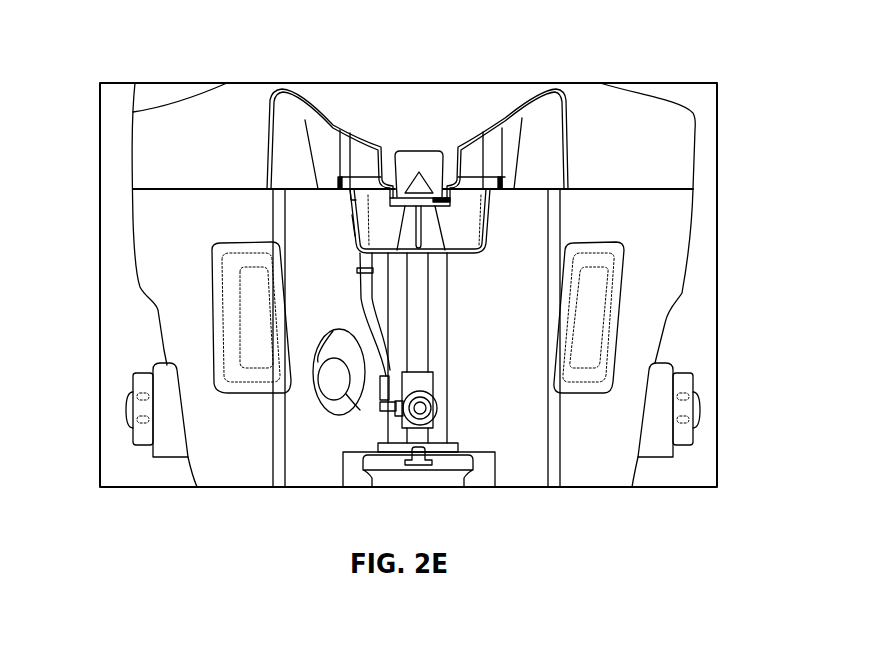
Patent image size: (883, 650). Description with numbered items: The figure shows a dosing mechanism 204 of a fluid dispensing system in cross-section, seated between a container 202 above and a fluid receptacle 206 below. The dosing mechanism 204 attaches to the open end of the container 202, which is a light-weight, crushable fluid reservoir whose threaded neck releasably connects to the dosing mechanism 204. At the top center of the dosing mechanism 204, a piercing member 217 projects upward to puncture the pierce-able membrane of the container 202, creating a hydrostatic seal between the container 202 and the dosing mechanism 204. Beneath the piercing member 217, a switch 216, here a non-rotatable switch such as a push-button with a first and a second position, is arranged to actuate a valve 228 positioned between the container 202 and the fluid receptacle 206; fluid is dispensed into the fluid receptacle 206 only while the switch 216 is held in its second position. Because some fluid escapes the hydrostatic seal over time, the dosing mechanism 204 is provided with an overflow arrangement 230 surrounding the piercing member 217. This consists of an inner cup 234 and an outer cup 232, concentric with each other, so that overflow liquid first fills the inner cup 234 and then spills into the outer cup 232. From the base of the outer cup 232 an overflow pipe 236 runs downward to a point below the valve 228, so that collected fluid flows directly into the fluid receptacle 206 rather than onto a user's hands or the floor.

The container 202 is at (488, 198).
The piercing member 217 is at (427, 233).
The dosing mechanism 204 is at (752, 228).
The inner cup 234 is at (350, 200).
The outer cup 232 is at (352, 231).
The overflow pipe 236 is at (367, 289).
The fluid receptacle 206 is at (350, 475).
The switch 216 is at (436, 413).
The valve 228 is at (423, 387).
The overflow arrangement 230 is at (488, 247).